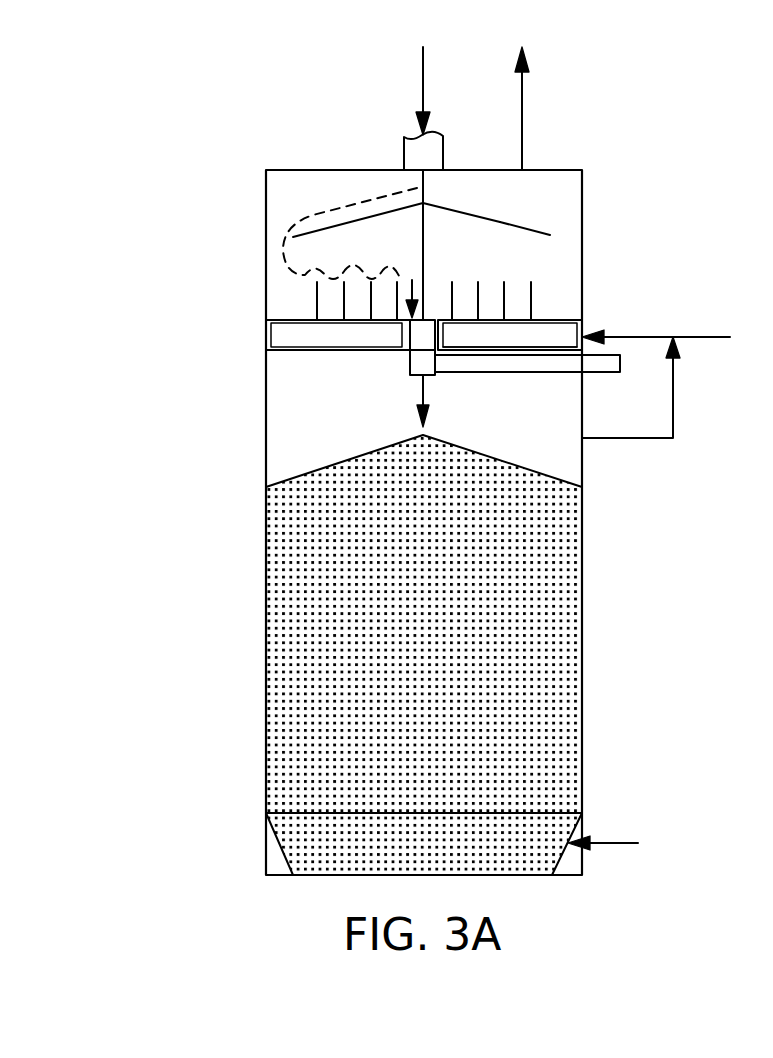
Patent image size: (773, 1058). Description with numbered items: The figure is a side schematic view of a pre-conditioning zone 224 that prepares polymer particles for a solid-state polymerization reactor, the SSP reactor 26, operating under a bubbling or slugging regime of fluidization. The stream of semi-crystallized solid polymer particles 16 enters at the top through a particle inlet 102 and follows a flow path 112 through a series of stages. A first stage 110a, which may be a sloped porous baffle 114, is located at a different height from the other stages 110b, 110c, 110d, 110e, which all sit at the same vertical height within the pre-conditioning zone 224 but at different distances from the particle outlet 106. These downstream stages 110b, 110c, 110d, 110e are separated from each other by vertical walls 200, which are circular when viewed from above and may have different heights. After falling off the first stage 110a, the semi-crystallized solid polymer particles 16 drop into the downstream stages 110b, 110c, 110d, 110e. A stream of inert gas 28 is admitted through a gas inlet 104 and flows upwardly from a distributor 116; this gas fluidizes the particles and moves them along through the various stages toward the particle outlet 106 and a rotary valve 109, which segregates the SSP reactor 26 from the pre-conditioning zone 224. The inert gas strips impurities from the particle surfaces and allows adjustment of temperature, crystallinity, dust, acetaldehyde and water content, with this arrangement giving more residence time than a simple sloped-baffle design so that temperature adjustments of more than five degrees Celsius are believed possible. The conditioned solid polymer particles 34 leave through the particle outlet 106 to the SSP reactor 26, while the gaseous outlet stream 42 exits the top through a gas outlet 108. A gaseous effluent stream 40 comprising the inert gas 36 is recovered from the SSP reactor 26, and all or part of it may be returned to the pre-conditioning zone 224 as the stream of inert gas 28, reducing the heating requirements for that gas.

The pre-conditioning zone 224 is at (186, 158).
The semi-crystallized solid polymer particles 16 is at (423, 70).
The particle inlet 102 is at (405, 158).
The gas outlet 108 is at (525, 170).
The gaseous outlet stream 42 is at (522, 88).
The flow path 112 is at (313, 215).
The porous baffle 114 is at (475, 223).
The first stage 110a is at (548, 232).
The stage 110b is at (283, 309).
The stage 110c is at (333, 307).
The stage 110d is at (358, 307).
The stage 110e is at (383, 307).
The vertical walls 200 is at (315, 288).
The particle outlet 106 is at (422, 330).
The gas inlet 104 is at (585, 333).
The distributor 116 is at (553, 340).
The rotary valve 109 is at (430, 375).
The conditioned solid polymer particles 34 is at (430, 398).
The stream of inert gas 28 is at (655, 337).
The gaseous effluent stream 40 is at (673, 388).
The SSP reactor 26 is at (268, 573).
The inert gas 36 is at (610, 845).